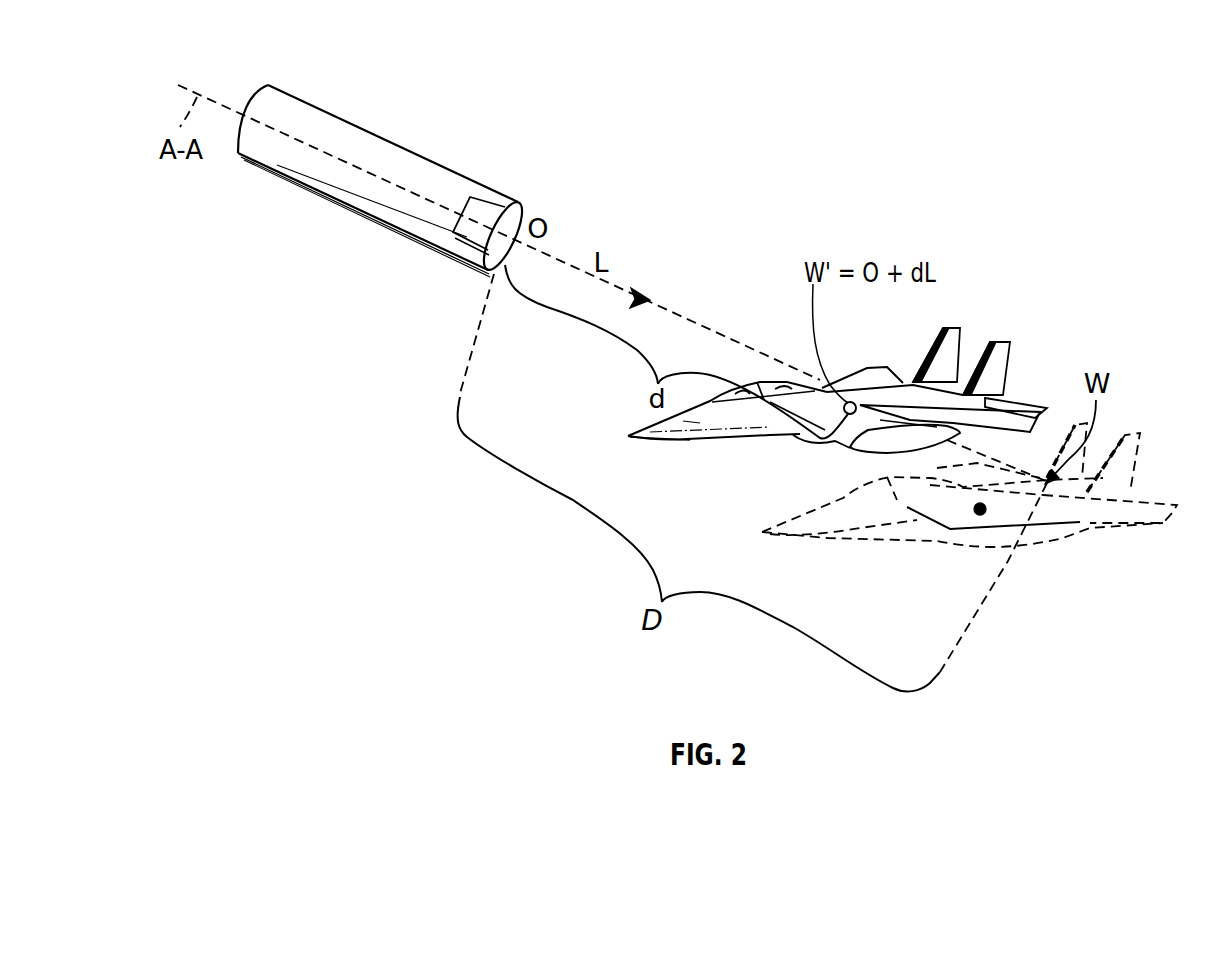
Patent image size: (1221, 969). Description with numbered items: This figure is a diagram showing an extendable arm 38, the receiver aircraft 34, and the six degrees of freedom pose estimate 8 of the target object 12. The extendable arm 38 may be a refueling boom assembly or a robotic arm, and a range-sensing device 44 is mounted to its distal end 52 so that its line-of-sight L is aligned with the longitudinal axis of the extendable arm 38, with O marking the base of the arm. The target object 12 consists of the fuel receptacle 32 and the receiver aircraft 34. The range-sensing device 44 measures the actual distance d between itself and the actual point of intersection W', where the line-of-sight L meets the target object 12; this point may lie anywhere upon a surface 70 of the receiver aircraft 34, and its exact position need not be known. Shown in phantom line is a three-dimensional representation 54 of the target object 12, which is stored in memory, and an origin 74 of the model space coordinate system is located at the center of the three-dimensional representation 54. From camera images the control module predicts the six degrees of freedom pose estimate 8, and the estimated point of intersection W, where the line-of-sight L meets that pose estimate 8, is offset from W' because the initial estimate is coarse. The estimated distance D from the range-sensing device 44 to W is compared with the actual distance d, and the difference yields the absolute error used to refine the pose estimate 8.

The extendable arm 38 is at (323, 118).
The distal end 52 is at (496, 192).
The range-sensing device 44 is at (460, 253).
The target object 12 is at (1011, 362).
The receiver aircraft 34 is at (680, 436).
The surface 70 is at (683, 421).
The fuel receptacle 32 is at (848, 415).
The three-dimensional representation 54 is at (820, 537).
The origin 74 is at (957, 512).
The six degrees of freedom pose estimate 8 is at (1052, 547).